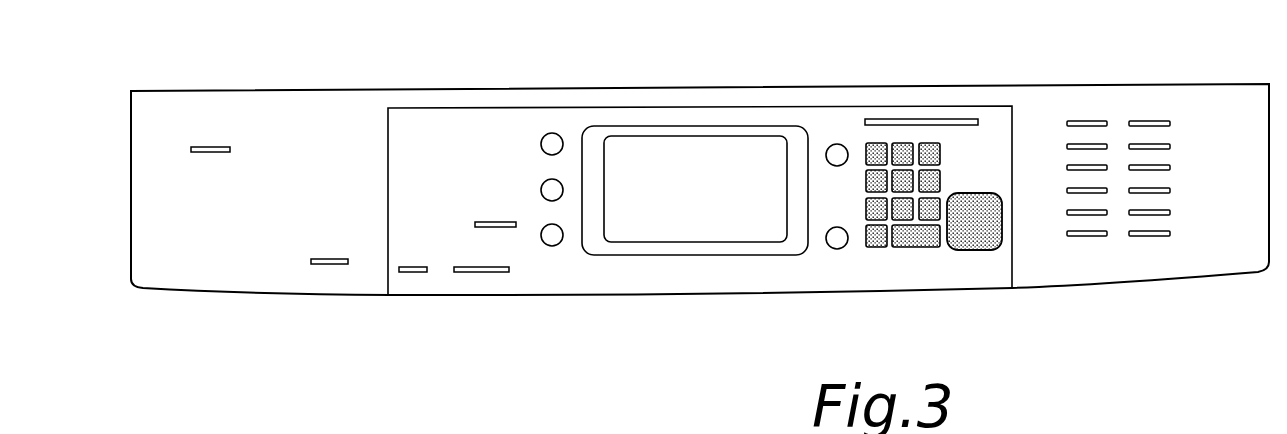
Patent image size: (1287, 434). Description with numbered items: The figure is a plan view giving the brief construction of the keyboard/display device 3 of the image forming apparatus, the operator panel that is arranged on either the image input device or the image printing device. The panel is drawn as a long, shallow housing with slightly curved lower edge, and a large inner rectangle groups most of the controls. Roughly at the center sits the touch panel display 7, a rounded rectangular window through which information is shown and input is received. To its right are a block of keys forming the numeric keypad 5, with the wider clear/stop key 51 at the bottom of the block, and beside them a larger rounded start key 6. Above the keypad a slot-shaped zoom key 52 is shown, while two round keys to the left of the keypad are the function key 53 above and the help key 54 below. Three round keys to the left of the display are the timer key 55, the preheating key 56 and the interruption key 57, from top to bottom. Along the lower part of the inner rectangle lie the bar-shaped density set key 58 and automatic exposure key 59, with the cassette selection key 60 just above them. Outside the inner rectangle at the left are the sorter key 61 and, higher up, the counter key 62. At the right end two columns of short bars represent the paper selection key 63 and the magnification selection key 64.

The keyboard/display device 3 is at (679, 298).
The numeric keypad 5 is at (905, 150).
The start key 6 is at (981, 232).
The touch panel display 7 is at (683, 135).
The clear/stop key 51 is at (925, 240).
The zoom key 52 is at (948, 120).
The function key 53 is at (834, 148).
The help key 54 is at (835, 248).
The timer key 55 is at (556, 134).
The preheating key 56 is at (544, 184).
The interruption key 57 is at (553, 245).
The density set key 58 is at (490, 272).
The automatic exposure key 59 is at (421, 272).
The cassette selection key 60 is at (476, 222).
The sorter key 61 is at (333, 264).
The counter key 62 is at (223, 147).
The paper selection key 63 is at (1160, 237).
The magnification selection key 64 is at (1098, 237).